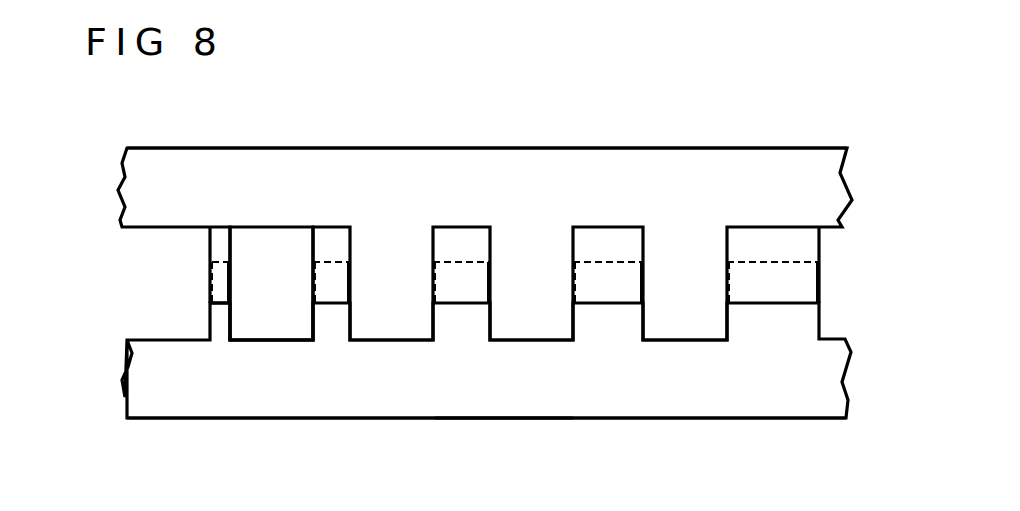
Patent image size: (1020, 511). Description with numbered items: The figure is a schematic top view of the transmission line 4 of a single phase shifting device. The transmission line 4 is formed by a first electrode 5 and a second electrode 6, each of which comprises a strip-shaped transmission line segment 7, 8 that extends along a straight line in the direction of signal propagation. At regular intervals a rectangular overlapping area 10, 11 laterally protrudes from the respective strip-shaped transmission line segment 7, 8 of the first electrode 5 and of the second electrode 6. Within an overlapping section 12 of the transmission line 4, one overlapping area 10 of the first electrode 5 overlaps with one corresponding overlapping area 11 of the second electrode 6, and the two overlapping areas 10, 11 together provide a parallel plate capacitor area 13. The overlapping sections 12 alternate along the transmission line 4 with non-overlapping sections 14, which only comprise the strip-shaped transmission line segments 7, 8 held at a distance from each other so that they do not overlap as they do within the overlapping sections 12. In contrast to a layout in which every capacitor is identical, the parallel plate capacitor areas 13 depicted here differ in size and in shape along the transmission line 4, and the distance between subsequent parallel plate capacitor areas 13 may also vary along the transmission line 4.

The transmission line 4 is at (462, 252).
The first electrode 5 is at (464, 350).
The second electrode 6 is at (462, 215).
The strip-shaped transmission line segment 7 is at (352, 405).
The strip-shaped transmission line segment 8 is at (227, 156).
The overlapping area 10 is at (230, 263).
The overlapping area 11 is at (212, 270).
The overlapping section 12 is at (492, 423).
The parallel plate capacitor area 13 is at (335, 252).
The non-overlapping section 14 is at (573, 423).